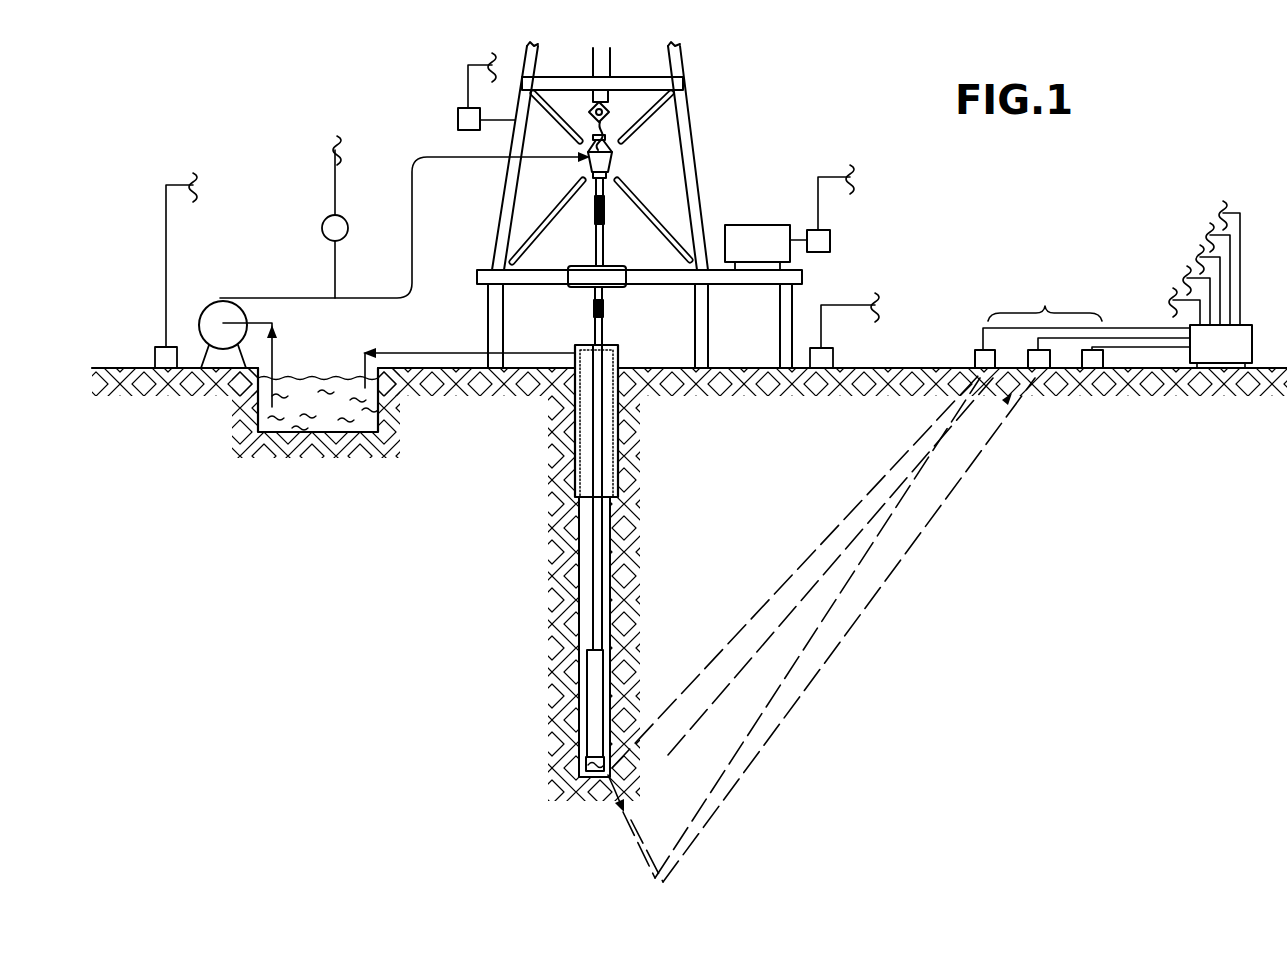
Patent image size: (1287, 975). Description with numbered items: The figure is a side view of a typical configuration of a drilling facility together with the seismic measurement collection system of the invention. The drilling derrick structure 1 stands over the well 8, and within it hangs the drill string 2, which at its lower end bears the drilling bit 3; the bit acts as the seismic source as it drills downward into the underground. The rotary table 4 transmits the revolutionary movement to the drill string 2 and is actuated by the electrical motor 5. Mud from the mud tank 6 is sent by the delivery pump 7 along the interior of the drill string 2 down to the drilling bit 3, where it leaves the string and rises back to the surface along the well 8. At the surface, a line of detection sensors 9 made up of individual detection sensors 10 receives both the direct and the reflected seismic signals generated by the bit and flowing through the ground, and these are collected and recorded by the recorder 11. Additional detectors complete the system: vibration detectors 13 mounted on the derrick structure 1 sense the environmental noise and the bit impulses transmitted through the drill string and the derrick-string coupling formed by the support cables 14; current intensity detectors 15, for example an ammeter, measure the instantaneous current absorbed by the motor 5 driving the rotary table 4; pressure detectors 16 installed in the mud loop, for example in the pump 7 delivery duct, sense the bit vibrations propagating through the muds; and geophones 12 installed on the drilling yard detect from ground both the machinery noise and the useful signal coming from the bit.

The drilling derrick structure 1 is at (685, 132).
The drill string 2 is at (592, 549).
The drilling bit 3 is at (586, 765).
The rotary table 4 is at (585, 272).
The electrical motor 5 is at (758, 235).
The mud tank 6 is at (318, 387).
The delivery pump 7 is at (220, 306).
The well 8 is at (578, 565).
The line of detection sensors 9 is at (1086, 317).
The detection sensors 10 is at (978, 352).
The recorder 11 is at (1233, 345).
The geophones 12 is at (165, 352).
The vibration detectors 13 is at (458, 118).
The support cables 14 is at (610, 71).
The current intensity detectors 15 is at (830, 240).
The pressure detectors 16 is at (322, 222).